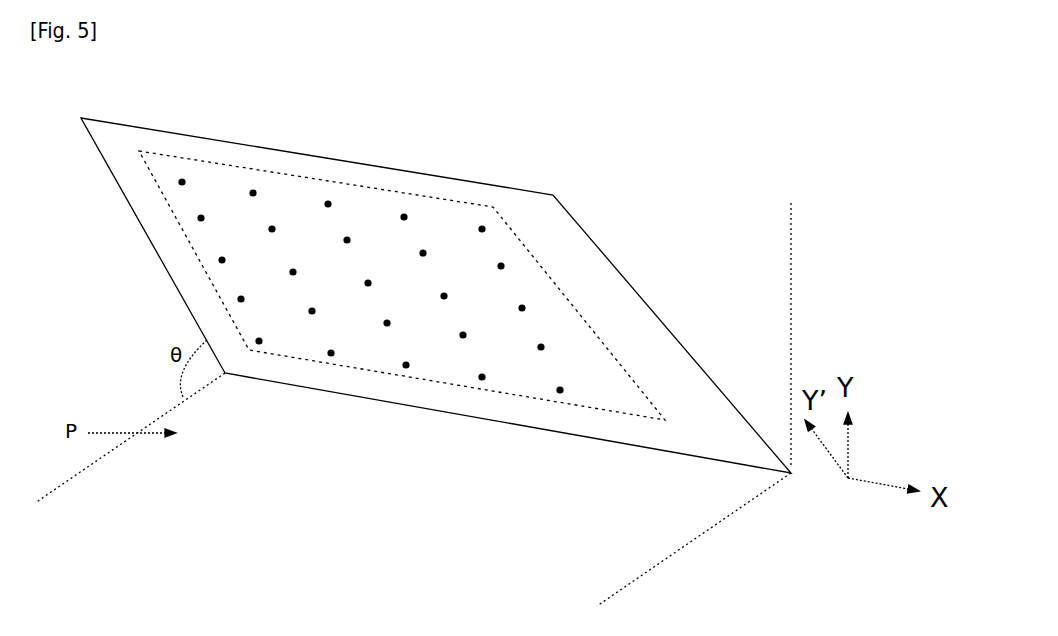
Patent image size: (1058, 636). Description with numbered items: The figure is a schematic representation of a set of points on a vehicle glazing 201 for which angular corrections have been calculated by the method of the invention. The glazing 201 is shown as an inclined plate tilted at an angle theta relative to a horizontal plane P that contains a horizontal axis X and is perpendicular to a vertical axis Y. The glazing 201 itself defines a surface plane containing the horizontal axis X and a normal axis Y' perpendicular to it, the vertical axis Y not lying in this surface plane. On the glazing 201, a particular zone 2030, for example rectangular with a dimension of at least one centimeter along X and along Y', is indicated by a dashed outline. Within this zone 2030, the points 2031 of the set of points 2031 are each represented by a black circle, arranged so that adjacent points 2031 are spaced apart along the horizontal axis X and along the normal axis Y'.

The glazing 201 is at (646, 284).
The zone 2030 is at (446, 188).
The points 2031 is at (190, 164).